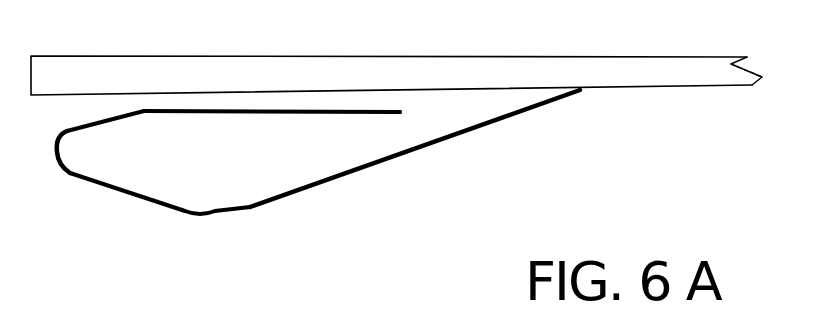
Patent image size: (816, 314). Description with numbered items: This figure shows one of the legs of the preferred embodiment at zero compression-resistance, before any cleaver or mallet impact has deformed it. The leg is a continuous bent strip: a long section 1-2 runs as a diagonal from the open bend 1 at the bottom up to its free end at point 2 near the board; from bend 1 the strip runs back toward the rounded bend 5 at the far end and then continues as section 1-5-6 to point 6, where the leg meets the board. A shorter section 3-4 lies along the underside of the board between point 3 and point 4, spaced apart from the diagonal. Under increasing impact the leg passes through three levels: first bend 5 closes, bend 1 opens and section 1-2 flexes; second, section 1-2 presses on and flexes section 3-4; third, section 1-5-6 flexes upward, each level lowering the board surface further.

The bend 1 is at (160, 210).
The point 2 is at (417, 148).
The point 3 is at (262, 90).
The point 4 is at (393, 127).
The bend 5 is at (56, 140).
The point 6 is at (144, 95).